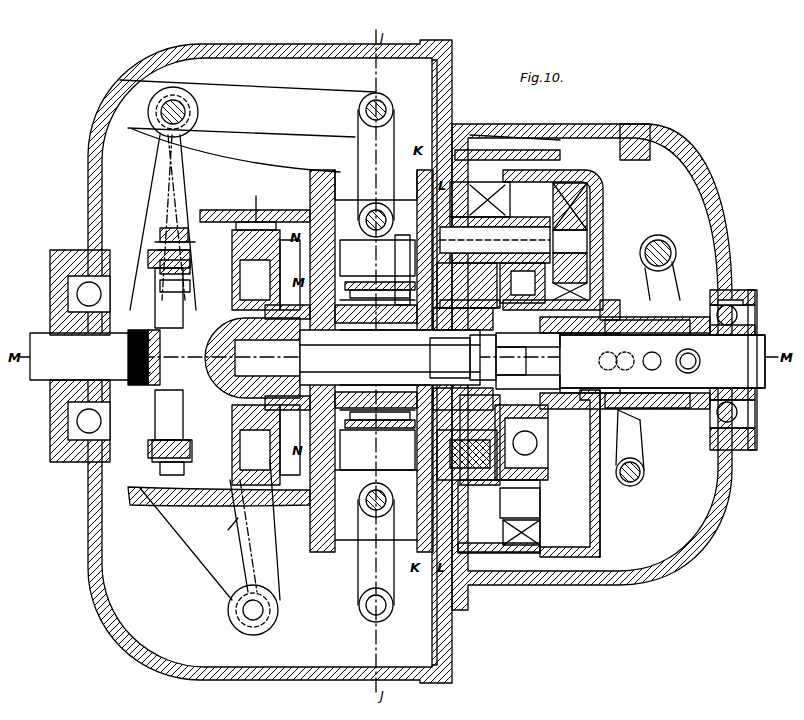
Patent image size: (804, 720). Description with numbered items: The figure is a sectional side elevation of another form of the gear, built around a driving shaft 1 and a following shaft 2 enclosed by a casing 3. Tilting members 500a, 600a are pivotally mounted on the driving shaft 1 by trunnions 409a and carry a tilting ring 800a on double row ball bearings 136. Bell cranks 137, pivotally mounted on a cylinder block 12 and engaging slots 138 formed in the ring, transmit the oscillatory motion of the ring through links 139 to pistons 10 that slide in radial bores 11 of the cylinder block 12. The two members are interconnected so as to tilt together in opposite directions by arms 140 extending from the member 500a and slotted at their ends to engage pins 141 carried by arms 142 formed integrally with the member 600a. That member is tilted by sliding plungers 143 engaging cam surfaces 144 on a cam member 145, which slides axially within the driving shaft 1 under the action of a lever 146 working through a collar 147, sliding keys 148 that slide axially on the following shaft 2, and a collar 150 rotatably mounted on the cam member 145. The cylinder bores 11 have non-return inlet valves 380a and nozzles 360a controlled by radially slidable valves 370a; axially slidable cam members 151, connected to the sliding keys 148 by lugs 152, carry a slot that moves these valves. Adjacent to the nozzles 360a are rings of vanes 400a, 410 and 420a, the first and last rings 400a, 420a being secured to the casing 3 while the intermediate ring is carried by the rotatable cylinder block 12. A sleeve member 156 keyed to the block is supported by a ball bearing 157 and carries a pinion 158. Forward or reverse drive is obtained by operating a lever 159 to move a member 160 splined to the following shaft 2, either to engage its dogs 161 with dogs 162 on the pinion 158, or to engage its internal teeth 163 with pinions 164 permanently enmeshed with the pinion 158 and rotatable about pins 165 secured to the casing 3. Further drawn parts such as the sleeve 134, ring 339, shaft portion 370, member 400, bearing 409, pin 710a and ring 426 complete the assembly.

The driving shaft 1 is at (90, 356).
The following shaft 2 is at (662, 361).
The casing 3 is at (118, 92).
The pistons 10 is at (377, 355).
The radial bores 11 is at (394, 339).
The cylinder block 12 is at (328, 172).
The sleeve 134 is at (376, 356).
The double row ball bearings 136 is at (254, 357).
The bell cranks 137 is at (188, 183).
The slots 138 is at (190, 240).
The links 139 is at (358, 572).
The arms 140 is at (506, 358).
The pins 141 is at (287, 355).
The arms 142 is at (463, 359).
The sliding plungers 143 is at (294, 357).
The cam surfaces 144 is at (255, 358).
The cam member 145 is at (398, 357).
The lever 146 is at (676, 258).
The collar 147 is at (678, 290).
The sliding keys 148 is at (640, 318).
The collar 150 is at (436, 358).
The axially slidable cam members 151 is at (528, 361).
The lugs 152 is at (584, 340).
The sleeve member 156 is at (560, 425).
The ball bearing 157 is at (548, 470).
The pinion 158 is at (600, 492).
The lever 159 is at (636, 440).
The member 160 is at (593, 205).
The dogs 161 is at (590, 286).
The dogs 162 is at (615, 305).
The internal teeth 163 is at (507, 147).
The pinions 164 is at (588, 206).
The pins 165 is at (575, 245).
The ring 339 is at (470, 301).
The nozzles 360a is at (381, 373).
The shaft portion 370 is at (385, 357).
The radially slidable valves 370a is at (378, 357).
The non-return inlet valves 380a is at (377, 356).
The clutch member 400 is at (472, 495).
The ring of vanes 400a is at (480, 196).
The bearing 409 is at (188, 400).
The trunnions 409a is at (128, 360).
The clutch ring 410 is at (505, 226).
The ring of vanes 420a is at (500, 215).
The ring 426 is at (487, 466).
The tilting member 500a is at (166, 457).
The tilting member 600a is at (219, 489).
The pin 710a is at (207, 266).
The tilting ring 800a is at (255, 204).